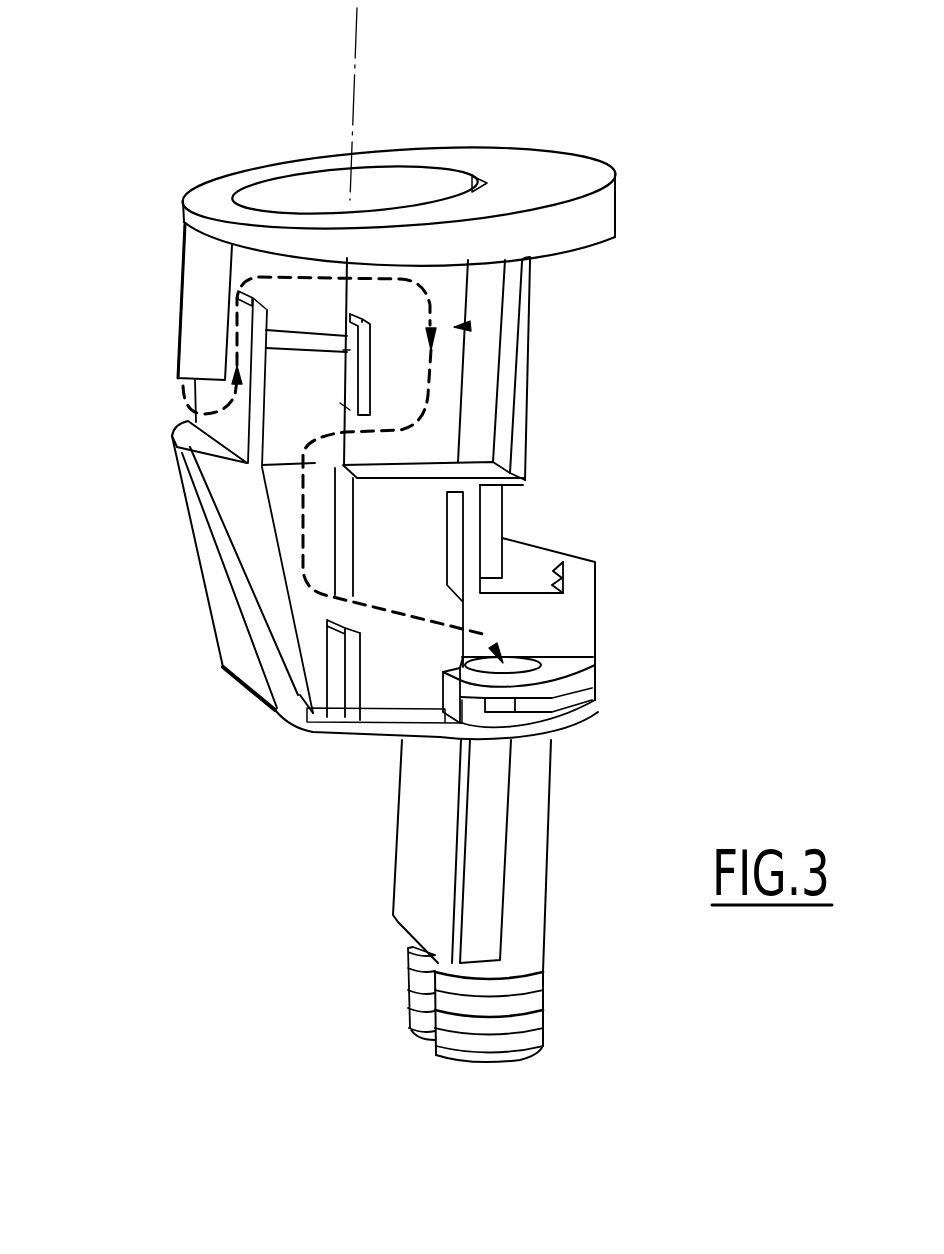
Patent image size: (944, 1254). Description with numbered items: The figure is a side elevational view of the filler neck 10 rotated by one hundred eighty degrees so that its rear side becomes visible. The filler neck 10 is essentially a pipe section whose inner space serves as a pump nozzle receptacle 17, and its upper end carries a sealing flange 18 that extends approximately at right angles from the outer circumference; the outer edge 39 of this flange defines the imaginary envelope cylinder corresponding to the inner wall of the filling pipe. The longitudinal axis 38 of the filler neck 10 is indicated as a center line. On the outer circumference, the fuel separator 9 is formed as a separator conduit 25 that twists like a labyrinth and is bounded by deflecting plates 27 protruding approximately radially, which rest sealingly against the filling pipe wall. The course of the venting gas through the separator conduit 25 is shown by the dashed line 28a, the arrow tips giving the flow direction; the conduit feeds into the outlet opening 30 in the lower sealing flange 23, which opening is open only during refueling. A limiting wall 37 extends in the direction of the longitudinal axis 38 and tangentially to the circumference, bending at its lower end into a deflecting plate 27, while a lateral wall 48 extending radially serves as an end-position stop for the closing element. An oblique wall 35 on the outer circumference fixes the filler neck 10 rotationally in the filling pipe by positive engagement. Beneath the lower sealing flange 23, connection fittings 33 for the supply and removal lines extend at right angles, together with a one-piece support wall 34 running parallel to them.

The filler neck 10 is at (190, 171).
The sealing flange 18 is at (570, 181).
The pump nozzle receptacle 17 is at (309, 200).
The longitudinal axis 38 is at (353, 42).
The outer edge 39 is at (578, 236).
The separator conduit 25 is at (448, 298).
The limiting wall 37 is at (528, 346).
The deflecting plates 27 is at (210, 306).
The dashed line 28a is at (425, 403).
The fuel separator 9 is at (468, 326).
The lateral wall 48 is at (523, 572).
The outlet opening 30 is at (522, 658).
The sealing flange 23 is at (585, 733).
The oblique wall 35 is at (218, 587).
The support wall 34 is at (417, 840).
The connection fittings 33 is at (512, 932).